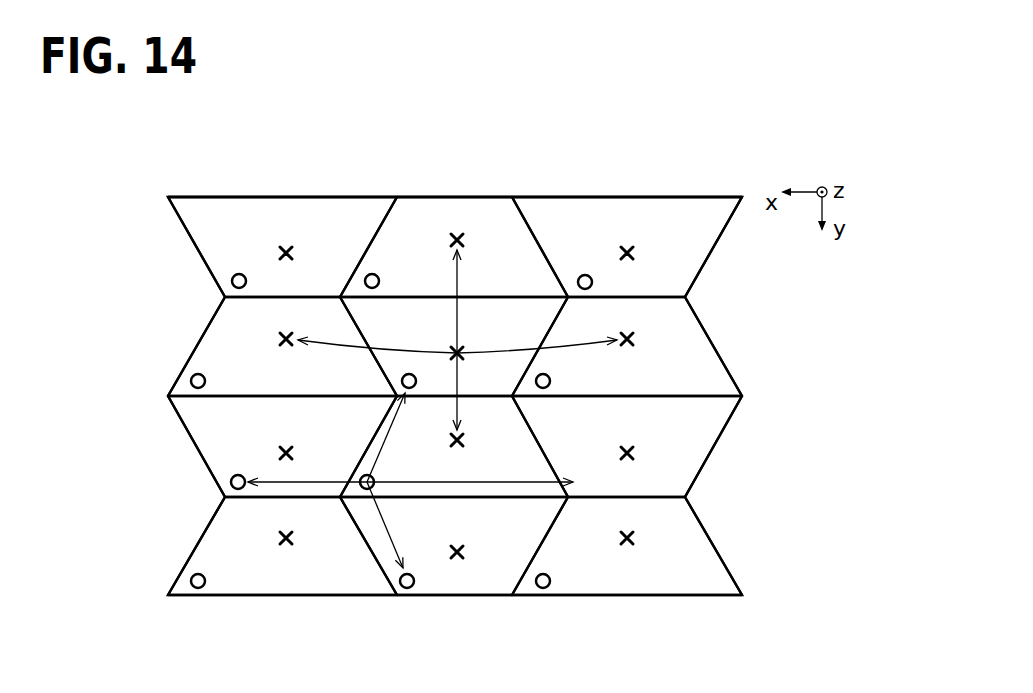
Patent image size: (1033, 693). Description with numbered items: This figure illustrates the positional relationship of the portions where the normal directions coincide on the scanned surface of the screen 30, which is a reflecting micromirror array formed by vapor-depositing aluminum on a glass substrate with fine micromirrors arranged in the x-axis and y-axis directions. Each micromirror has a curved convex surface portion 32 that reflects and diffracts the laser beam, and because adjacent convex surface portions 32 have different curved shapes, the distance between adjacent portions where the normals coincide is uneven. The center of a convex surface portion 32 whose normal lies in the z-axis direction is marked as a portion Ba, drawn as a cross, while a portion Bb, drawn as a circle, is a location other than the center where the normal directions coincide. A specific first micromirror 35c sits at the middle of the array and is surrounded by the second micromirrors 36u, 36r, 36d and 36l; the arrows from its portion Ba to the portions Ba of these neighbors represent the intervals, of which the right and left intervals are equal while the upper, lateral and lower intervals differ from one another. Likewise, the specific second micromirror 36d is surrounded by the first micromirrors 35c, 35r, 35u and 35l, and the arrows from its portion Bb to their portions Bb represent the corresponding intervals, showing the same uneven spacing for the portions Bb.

The screen 30 is at (712, 188).
The convex surface portion 32 is at (615, 203).
The specific first micromirror 35c is at (510, 307).
The first micromirror 35l is at (227, 443).
The first micromirror 35r is at (678, 482).
The first micromirror 35u is at (490, 573).
The second micromirror 36u is at (470, 218).
The second micromirror 36d is at (512, 435).
The second micromirror 36l is at (227, 322).
The second micromirror 36r is at (682, 325).
The portion Ba is at (630, 250).
The portion Bb is at (585, 275).